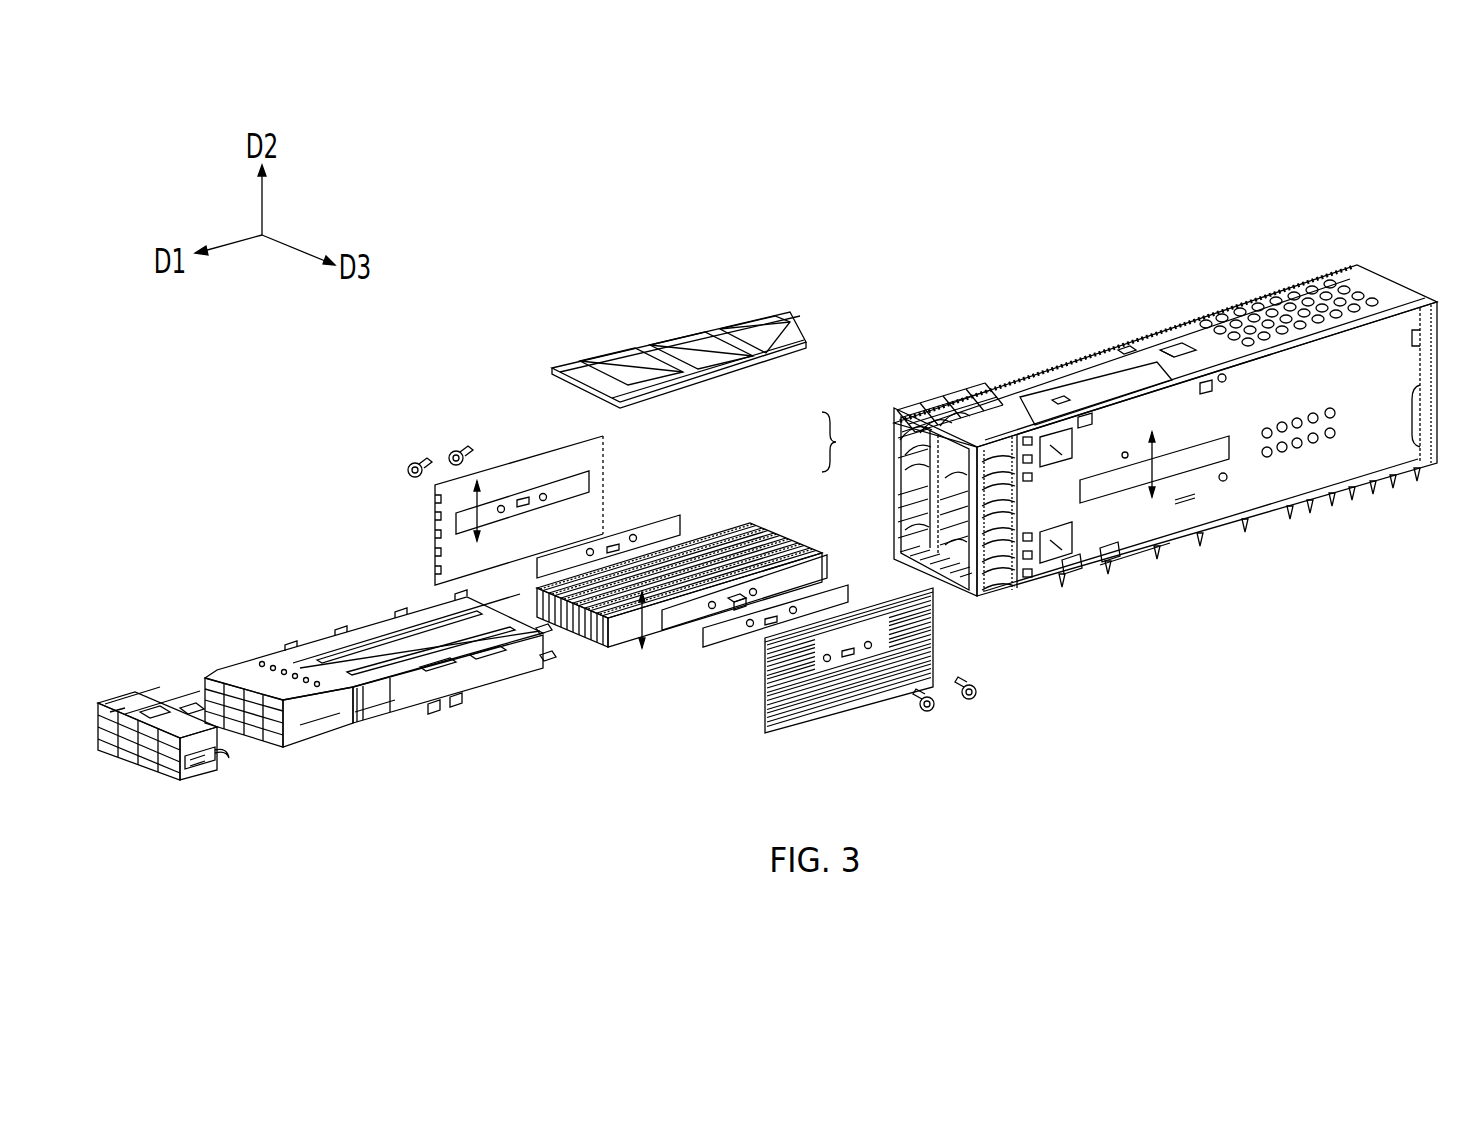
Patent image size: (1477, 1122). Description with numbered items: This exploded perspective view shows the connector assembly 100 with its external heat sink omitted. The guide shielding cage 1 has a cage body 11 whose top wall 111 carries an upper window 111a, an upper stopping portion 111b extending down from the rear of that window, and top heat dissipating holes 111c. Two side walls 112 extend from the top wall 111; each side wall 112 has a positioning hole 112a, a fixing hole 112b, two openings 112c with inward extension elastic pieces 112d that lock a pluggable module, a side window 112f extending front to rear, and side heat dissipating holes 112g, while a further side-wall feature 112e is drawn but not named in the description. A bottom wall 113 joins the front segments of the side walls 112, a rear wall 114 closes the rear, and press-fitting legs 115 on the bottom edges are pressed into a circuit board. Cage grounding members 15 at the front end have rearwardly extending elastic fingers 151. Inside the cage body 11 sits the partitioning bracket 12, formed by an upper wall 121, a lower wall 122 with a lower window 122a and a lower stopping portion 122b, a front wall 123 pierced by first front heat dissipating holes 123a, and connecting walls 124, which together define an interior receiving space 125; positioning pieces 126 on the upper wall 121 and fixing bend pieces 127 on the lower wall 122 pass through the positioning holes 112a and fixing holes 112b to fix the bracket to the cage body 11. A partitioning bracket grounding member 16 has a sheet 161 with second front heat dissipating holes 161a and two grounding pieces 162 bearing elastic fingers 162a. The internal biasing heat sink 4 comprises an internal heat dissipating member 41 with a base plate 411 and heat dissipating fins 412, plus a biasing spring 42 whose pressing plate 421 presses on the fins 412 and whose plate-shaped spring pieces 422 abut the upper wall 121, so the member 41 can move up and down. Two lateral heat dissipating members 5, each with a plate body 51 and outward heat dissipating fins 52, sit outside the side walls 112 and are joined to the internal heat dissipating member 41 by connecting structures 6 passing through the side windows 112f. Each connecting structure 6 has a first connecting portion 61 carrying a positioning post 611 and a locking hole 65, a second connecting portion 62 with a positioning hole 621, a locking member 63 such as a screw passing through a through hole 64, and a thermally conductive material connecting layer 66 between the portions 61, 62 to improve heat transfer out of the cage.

The connector assembly 100 is at (590, 171).
The guide shielding cage 1 is at (1155, 433).
The cage body 11 is at (1115, 330).
The top wall 111 is at (1044, 369).
The upper window 111a is at (1074, 365).
The upper stopping portion 111b is at (1179, 354).
The top heat dissipating holes 111c is at (1287, 296).
The side walls 112 is at (1265, 507).
The positioning hole 112a is at (1128, 459).
The fixing hole 112b is at (1237, 425).
The openings 112c is at (1088, 504).
The inward extension elastic piece 112d is at (1055, 547).
The side wall protrusion 112e is at (1209, 392).
The side window 112f is at (1182, 492).
The side heat dissipating holes 112g is at (1330, 408).
The bottom wall 113 is at (1137, 553).
The rear wall 114 is at (1440, 397).
The press-fitting legs 115 is at (1297, 507).
The cage grounding members 15 is at (886, 428).
The elastic fingers 151 is at (935, 430).
The internal biasing heat sink 4 is at (693, 495).
The internal heat dissipating member 41 is at (679, 591).
The base plate 411 is at (592, 650).
The heat dissipating fins 412 is at (736, 534).
The biasing spring 42 is at (681, 351).
The pressing plate 421 is at (676, 387).
The plate-shaped spring pieces 422 is at (729, 327).
The lateral heat dissipating members 5 is at (633, 584).
The plate body 51 is at (449, 555).
The heat dissipating fins 52 is at (435, 516).
The connecting structure 6 is at (661, 565).
The first connecting portion 61 is at (744, 624).
The positioning post 611 is at (735, 606).
The second connecting portion 62 is at (519, 490).
The positioning hole 621 is at (524, 507).
The locking member 63 is at (975, 698).
The through hole 64 is at (868, 649).
The locking hole 65 is at (752, 596).
The thermally conductive material connecting layer 66 is at (752, 640).
The partitioning bracket 12 is at (399, 699).
The upper wall 121 is at (380, 628).
The lower wall 122 is at (438, 722).
The lower window 122a is at (433, 670).
The lower stopping portion 122b is at (490, 668).
The front wall 123 is at (265, 761).
The first front heat dissipating holes 123a is at (277, 744).
The connecting walls 124 is at (370, 717).
The interior receiving space 125 is at (327, 707).
The positioning pieces 126 is at (453, 707).
The fixing bend pieces 127 is at (550, 670).
The partitioning bracket grounding member 16 is at (163, 731).
The sheet 161 is at (176, 809).
The second front heat dissipating holes 161a is at (168, 773).
The grounding pieces 162 is at (160, 664).
The elastic fingers 162a is at (190, 718).